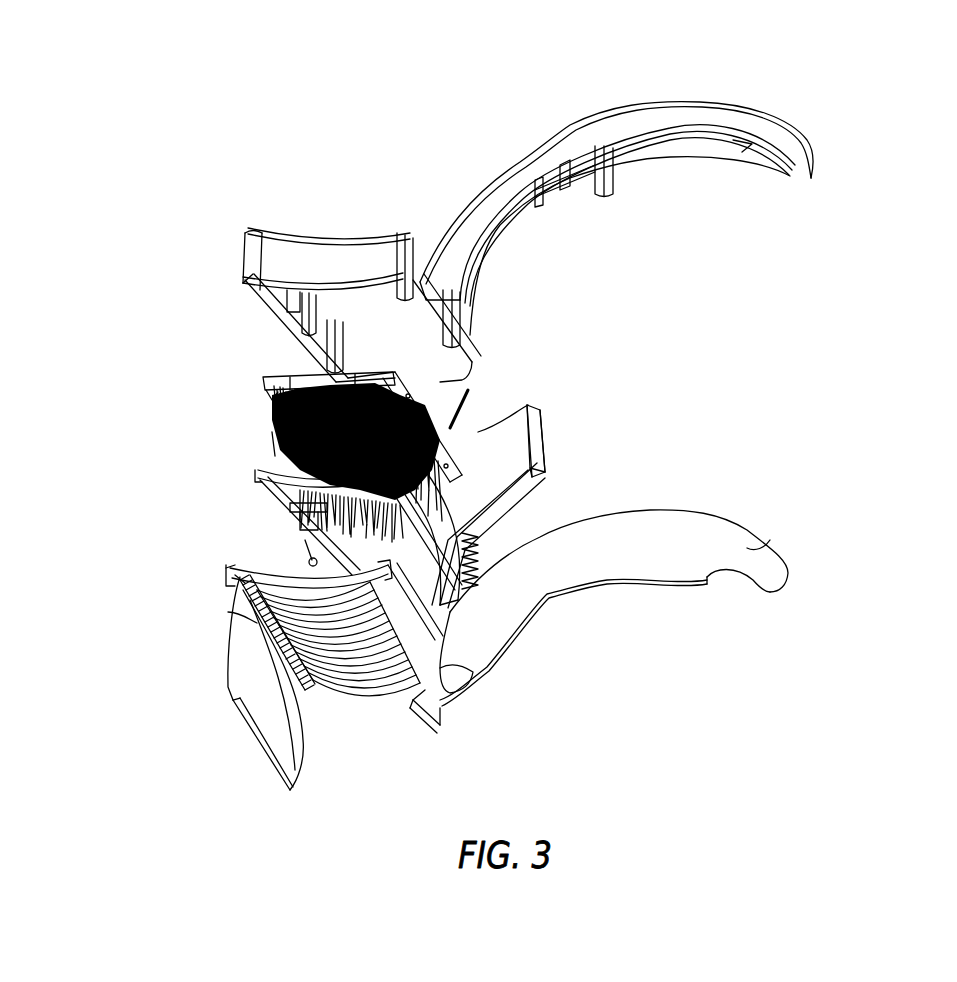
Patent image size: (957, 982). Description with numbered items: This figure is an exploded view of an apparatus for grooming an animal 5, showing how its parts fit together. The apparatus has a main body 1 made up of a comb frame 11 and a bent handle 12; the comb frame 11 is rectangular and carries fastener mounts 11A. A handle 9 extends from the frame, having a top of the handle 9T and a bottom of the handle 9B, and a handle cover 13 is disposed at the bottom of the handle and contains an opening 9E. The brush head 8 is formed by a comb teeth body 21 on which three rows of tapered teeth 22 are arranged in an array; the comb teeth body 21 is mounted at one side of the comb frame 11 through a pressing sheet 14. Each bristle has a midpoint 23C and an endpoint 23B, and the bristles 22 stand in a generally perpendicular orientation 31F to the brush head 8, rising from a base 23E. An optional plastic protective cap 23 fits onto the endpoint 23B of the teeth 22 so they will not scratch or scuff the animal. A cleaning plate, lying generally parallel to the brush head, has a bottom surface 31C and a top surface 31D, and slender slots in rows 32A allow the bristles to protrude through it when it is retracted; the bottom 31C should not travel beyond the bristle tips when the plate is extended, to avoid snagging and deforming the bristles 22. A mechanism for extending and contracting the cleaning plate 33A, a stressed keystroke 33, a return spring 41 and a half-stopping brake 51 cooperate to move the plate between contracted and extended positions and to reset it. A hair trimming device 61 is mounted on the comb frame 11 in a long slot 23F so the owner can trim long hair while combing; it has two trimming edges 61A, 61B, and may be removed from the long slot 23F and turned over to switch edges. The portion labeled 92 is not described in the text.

The main body 1 is at (453, 123).
The apparatus for grooming an animal 5 is at (222, 108).
The brush head 8 is at (131, 358).
The handle 9 is at (846, 221).
The top of the handle 9T is at (690, 90).
The bottom of the handle 9B is at (660, 594).
The opening 9E is at (737, 584).
The comb frame 11 is at (283, 252).
The fastener mounts 11A is at (440, 306).
The bent handle 12 is at (483, 198).
The handle cover 13 is at (548, 596).
The pressing sheet 14 is at (256, 480).
The comb teeth body 21 is at (268, 383).
The comb teeth 22 is at (270, 420).
The plastic protective cap 23 is at (517, 483).
The endpoint 23B is at (275, 455).
The midpoint 23C is at (272, 400).
The base 23E is at (478, 432).
The long slot 23F is at (240, 585).
The bottom surface of the push plate 31C is at (242, 568).
The top surface 31D is at (245, 606).
The perpendicular orientation 31F is at (228, 572).
The rows 32A is at (358, 690).
The stressed keystroke 33 is at (545, 408).
The mechanism for extending and contracting the cleaning plate 33A is at (546, 445).
The return spring 41 is at (480, 543).
The half-stopping brake 51 is at (470, 390).
The hair trimming device 61 is at (232, 665).
The trimming edge 61A is at (232, 622).
The trimming edge 61B is at (235, 703).
The end lobe 92 is at (770, 540).